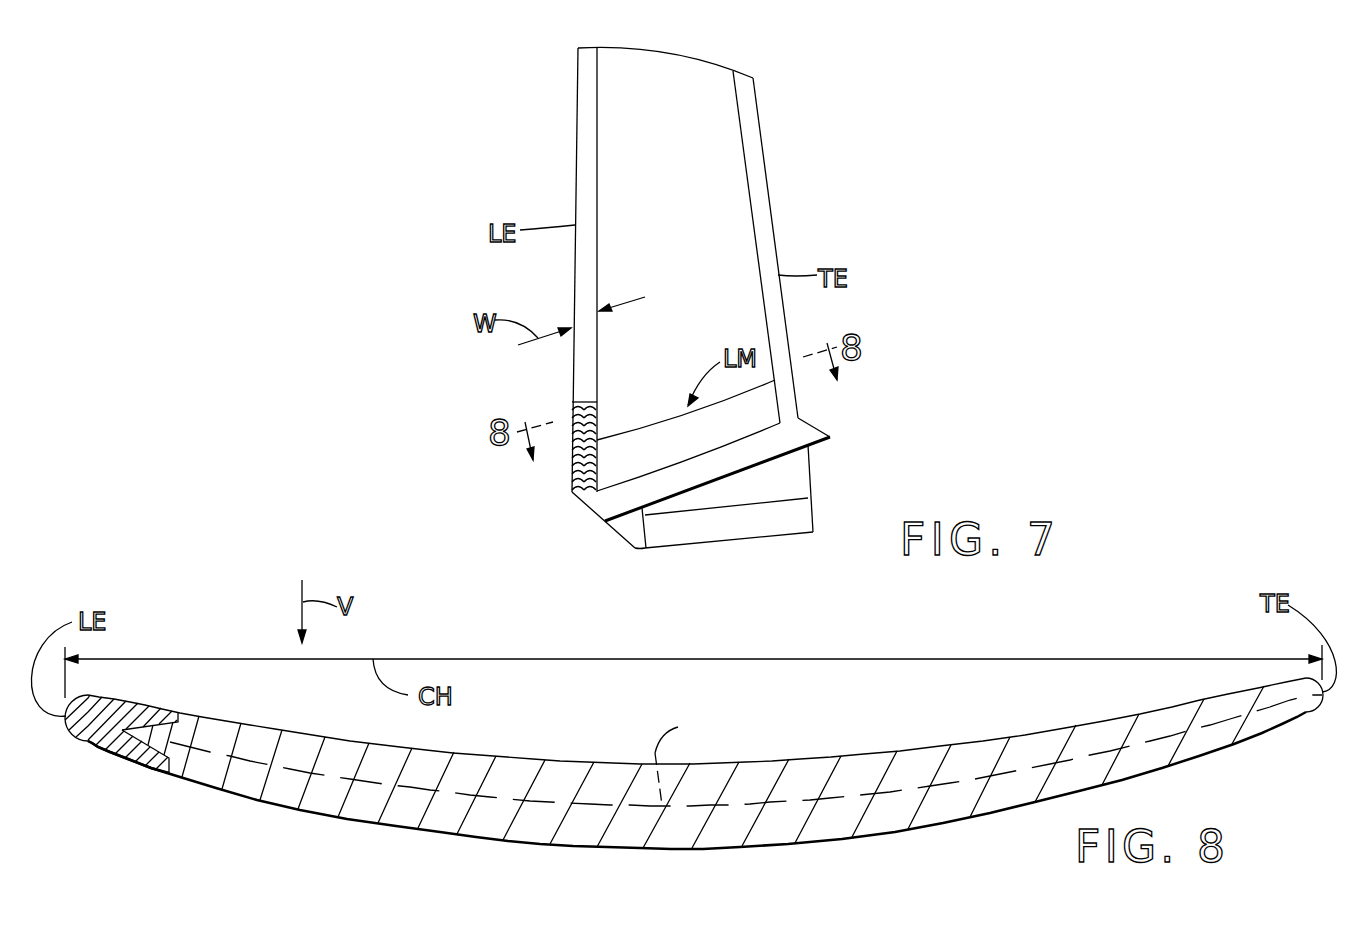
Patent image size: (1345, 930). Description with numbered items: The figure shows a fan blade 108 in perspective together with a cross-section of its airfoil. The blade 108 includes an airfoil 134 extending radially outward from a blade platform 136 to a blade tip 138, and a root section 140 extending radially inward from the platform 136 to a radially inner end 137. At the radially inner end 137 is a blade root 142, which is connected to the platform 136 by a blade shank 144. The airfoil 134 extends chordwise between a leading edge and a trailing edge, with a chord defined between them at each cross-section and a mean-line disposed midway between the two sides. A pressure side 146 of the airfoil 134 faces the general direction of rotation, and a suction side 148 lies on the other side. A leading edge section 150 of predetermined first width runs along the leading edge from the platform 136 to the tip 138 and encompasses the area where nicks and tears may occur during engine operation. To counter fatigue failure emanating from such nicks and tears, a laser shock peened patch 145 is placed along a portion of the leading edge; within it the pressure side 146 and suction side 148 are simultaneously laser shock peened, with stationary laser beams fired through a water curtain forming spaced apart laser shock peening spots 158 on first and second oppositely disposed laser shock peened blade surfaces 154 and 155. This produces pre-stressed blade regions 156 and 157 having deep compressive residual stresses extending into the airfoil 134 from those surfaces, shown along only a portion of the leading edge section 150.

In FIG. 7, the blade 108 is at (789, 66).
In FIG. 8, the blade 108 is at (763, 750).
In FIG. 7, the airfoil 134 is at (713, 269).
In FIG. 7, the blade tip 138 is at (667, 55).
In FIG. 7, the blade platform 136 is at (803, 435).
In FIG. 7, the root section 140 is at (767, 472).
In FIG. 7, the blade shank 144 is at (810, 472).
In FIG. 7, the radially inner end 137 is at (810, 497).
In FIG. 7, the blade root 142 is at (630, 535).
In FIG. 7, the leading edge section 150 is at (597, 353).
In FIG. 8, the leading edge section 150 is at (66, 730).
In FIG. 7, the laser shock peening spots 158 is at (597, 413).
In FIG. 7, the second laser shock peened blade surface 155 is at (597, 472).
In FIG. 8, the second laser shock peened blade surface 155 is at (110, 755).
In FIG. 7, the laser shock peened patch 145 is at (572, 467).
In FIG. 8, the pressure side 146 is at (483, 753).
In FIG. 8, the suction side 148 is at (387, 826).
In FIG. 8, the first laser shock peened blade surface 154 is at (110, 692).
In FIG. 8, the pre-stressed blade region 156 is at (165, 714).
In FIG. 8, the pre-stressed blade region 157 is at (133, 753).